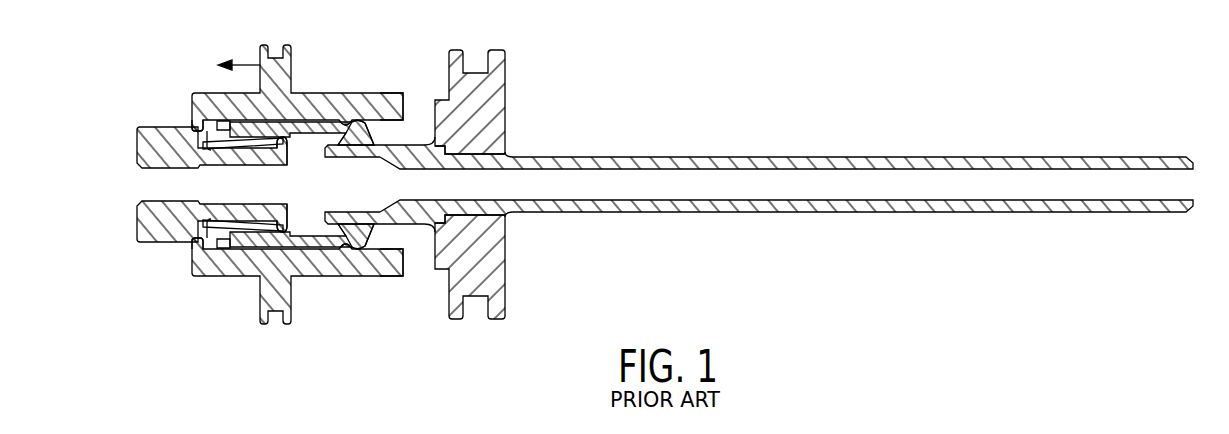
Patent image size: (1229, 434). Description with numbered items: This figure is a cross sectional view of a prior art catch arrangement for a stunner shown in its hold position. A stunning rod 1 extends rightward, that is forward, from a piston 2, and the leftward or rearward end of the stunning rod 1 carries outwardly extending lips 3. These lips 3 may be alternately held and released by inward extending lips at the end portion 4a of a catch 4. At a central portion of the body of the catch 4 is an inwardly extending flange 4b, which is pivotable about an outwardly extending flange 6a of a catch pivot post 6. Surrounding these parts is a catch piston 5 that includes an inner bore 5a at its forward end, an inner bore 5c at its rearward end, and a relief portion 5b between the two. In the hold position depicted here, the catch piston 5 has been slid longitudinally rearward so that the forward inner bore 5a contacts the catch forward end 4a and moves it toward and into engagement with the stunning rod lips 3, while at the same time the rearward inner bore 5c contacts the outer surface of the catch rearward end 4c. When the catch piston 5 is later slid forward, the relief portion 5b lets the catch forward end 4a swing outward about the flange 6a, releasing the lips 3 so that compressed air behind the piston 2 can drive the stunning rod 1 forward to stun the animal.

The stunning rod 1 is at (599, 160).
The piston 2 is at (506, 100).
The outwardly extending lips 3 is at (342, 149).
The catch 4 is at (356, 103).
The end portion of catch 4a is at (352, 226).
The inwardly extending flange 4b is at (258, 143).
The catch rearward end 4c is at (211, 136).
The catch piston 5 is at (304, 78).
The inner bore at forward end 5a is at (383, 122).
The relief portion 5b is at (334, 107).
The inner bore at rearward end 5c is at (200, 127).
The catch pivot post 6 is at (160, 257).
The outwardly extending flange of catch pivot post 6a is at (285, 164).